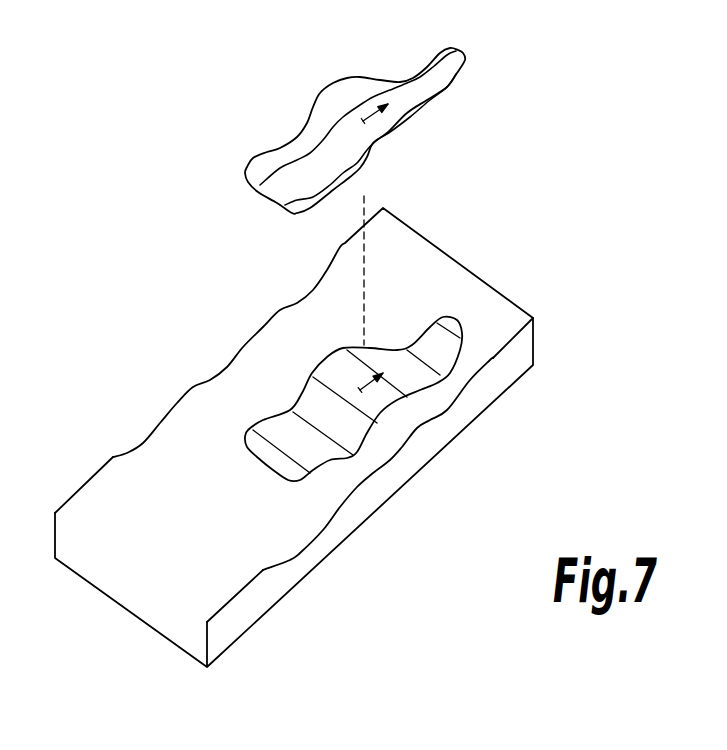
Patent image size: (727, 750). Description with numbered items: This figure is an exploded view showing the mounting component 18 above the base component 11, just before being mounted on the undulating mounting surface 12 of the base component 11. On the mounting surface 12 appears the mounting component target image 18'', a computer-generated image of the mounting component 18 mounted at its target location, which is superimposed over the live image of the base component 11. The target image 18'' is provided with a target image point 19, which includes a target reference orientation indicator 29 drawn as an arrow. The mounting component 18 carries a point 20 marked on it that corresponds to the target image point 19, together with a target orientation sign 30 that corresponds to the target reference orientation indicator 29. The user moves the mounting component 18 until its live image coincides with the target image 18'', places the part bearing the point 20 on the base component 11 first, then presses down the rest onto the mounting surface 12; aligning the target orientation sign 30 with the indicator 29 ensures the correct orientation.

The base component 11 is at (280, 445).
The mounting surface 12 is at (280, 415).
The mounting component 18 is at (338, 107).
The mounting component target image 18'' is at (376, 437).
The target image point 19 is at (364, 392).
The point 20 is at (355, 116).
The target reference orientation indicator 29 is at (387, 371).
The target orientation sign 30 is at (391, 102).